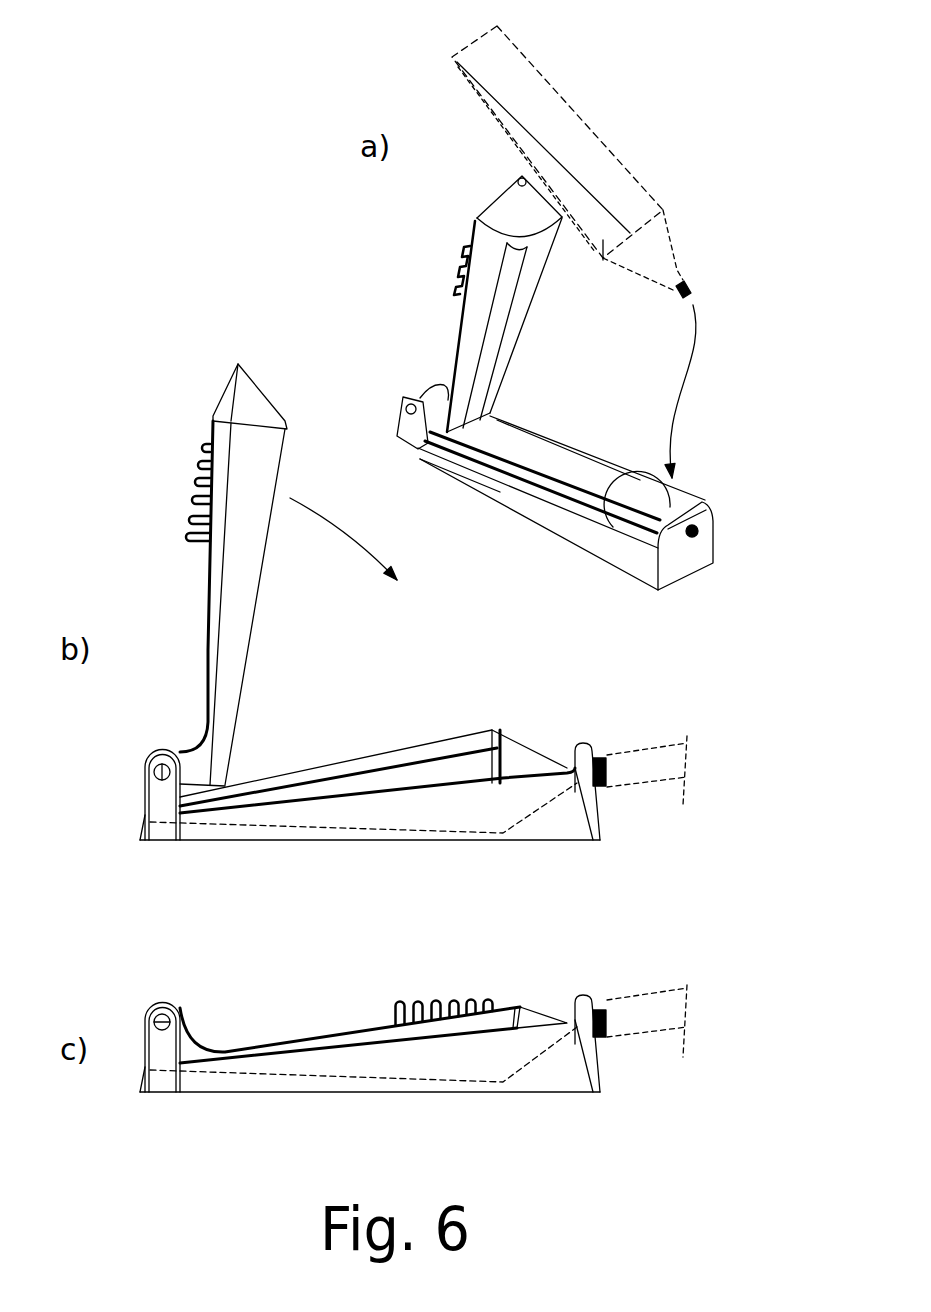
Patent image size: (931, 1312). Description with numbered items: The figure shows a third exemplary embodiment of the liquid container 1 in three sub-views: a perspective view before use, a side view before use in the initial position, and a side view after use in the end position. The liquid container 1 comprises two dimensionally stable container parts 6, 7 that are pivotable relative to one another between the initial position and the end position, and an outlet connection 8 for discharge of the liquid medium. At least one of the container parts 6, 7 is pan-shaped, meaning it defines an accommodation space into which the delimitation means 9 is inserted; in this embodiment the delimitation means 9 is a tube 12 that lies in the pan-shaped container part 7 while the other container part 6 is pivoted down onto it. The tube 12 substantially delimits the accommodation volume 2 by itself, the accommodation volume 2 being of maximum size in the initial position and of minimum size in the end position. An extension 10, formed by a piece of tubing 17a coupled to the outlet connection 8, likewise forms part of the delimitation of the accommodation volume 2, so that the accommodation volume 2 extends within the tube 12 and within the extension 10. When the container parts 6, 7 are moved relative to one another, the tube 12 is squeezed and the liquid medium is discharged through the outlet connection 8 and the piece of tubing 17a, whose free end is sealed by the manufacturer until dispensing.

The liquid container 1 is at (700, 150).
The accommodation volume 2 is at (530, 453).
The container part 6 is at (473, 323).
The container part 7 is at (572, 530).
The outlet connection 8 is at (717, 521).
The delimitation means 9 is at (410, 716).
The tube 12 is at (596, 258).
The extension 10 is at (632, 541).
The piece of tubing 17a is at (667, 747).